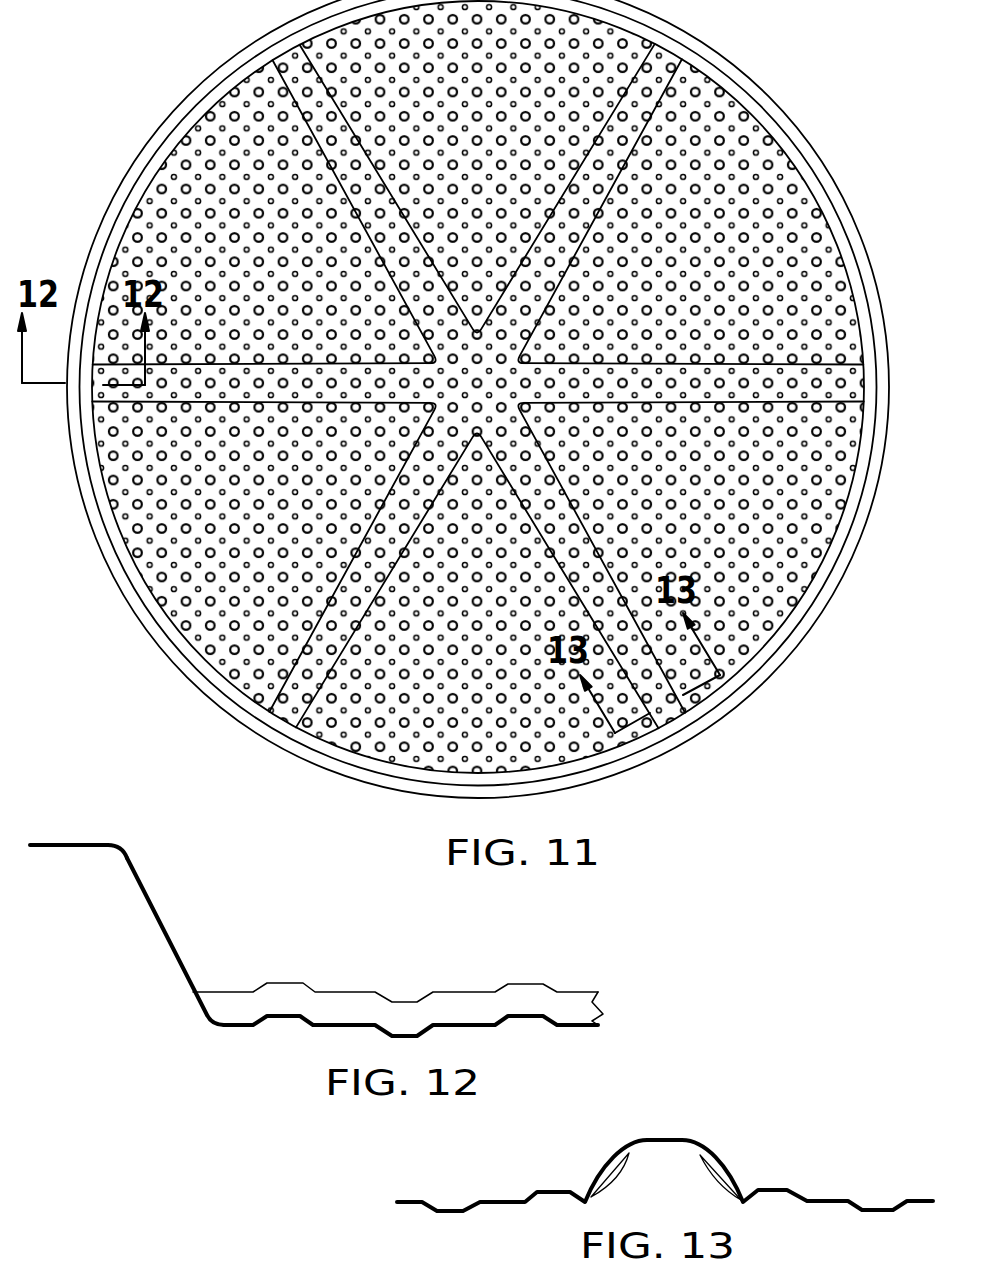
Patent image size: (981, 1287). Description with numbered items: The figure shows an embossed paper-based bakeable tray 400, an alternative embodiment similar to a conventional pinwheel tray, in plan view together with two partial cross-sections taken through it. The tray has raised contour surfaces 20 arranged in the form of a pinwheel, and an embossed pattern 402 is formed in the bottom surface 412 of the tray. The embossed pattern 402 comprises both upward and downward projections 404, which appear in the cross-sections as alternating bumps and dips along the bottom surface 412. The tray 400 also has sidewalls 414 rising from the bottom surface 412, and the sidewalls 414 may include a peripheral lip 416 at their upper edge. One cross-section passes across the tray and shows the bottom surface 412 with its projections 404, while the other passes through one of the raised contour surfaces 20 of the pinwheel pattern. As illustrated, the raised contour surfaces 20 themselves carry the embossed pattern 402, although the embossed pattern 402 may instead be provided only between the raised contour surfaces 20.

In FIG. 11, the embossed paper-based bakeable tray 400 is at (812, 88).
In FIG. 11, the embossed pattern 402 is at (230, 118).
In FIG. 12, the upward and downward projections 404 is at (520, 988).
In FIG. 13, the upward and downward projections 404 is at (610, 1172).
In FIG. 12, the bottom surface 412 is at (597, 1015).
In FIG. 13, the bottom surface 412 is at (398, 1200).
In FIG. 12, the sidewalls 414 is at (147, 903).
In FIG. 12, the peripheral lip 416 is at (97, 843).
In FIG. 12, the raised contour surfaces 20 is at (573, 1003).
In FIG. 13, the raised contour surfaces 20 is at (720, 1160).